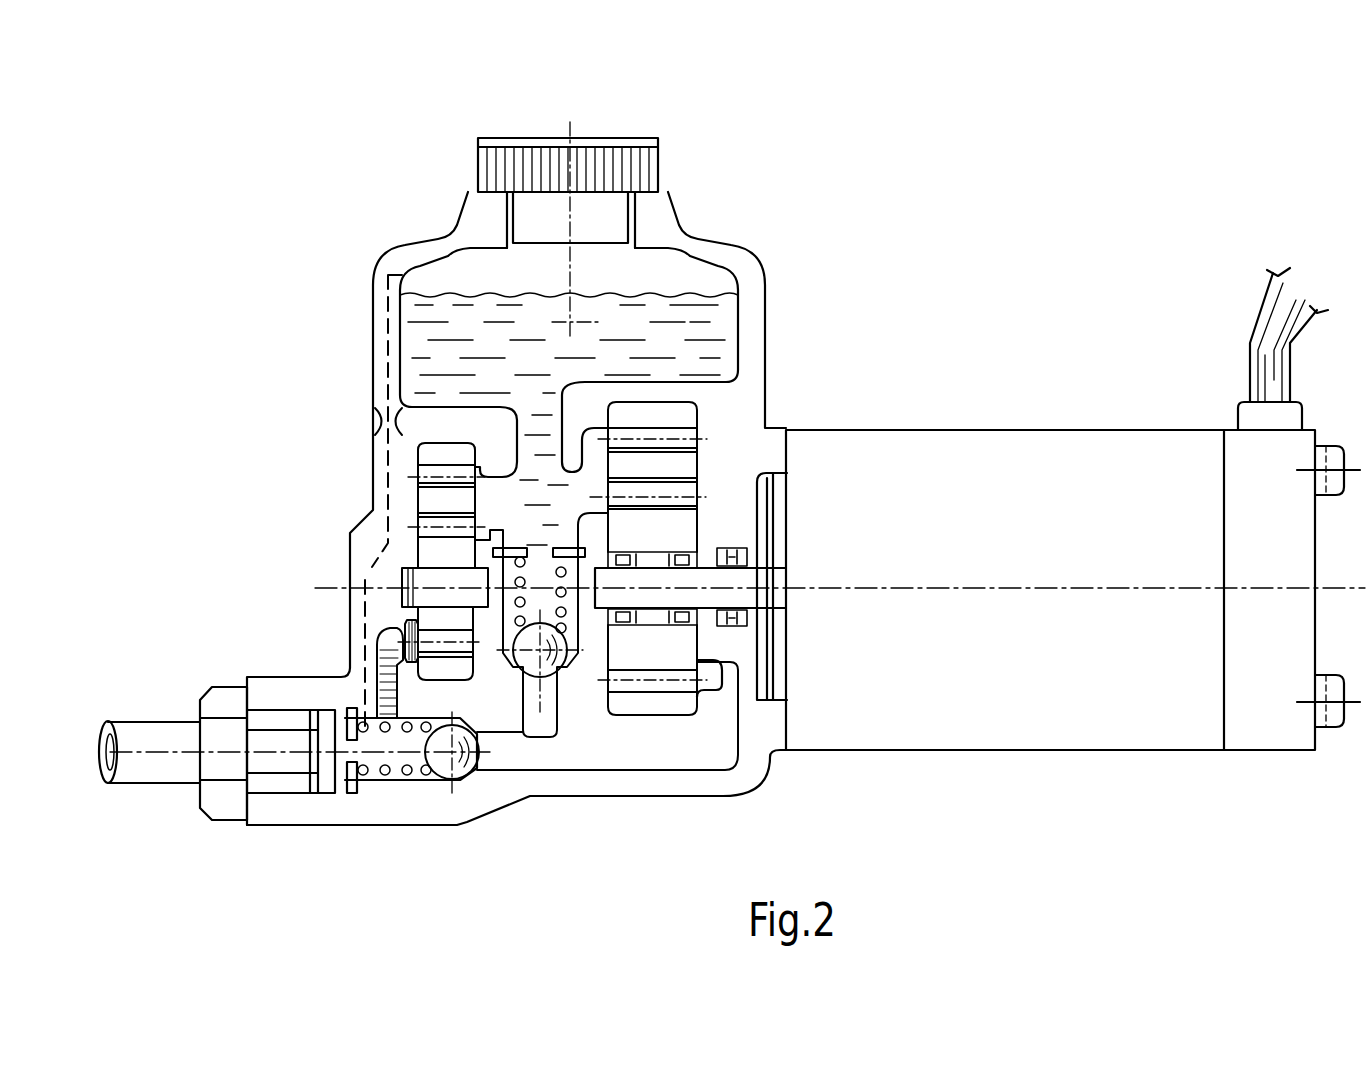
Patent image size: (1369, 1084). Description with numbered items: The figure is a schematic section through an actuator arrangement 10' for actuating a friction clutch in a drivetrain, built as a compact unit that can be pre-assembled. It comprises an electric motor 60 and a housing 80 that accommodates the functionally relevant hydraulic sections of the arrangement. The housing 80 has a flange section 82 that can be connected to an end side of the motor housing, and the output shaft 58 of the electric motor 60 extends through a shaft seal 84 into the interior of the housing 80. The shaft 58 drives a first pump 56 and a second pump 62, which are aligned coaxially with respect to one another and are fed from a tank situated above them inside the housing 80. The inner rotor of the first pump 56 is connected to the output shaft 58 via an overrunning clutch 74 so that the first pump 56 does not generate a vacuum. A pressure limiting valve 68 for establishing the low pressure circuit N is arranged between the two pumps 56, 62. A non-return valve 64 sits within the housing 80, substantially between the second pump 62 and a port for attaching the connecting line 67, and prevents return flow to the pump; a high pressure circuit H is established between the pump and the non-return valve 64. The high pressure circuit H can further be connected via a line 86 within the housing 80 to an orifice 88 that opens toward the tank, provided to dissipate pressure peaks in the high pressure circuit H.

The actuator arrangement 10' is at (1245, 112).
The housing 80 is at (745, 270).
The line 86 is at (380, 345).
The orifice 88 is at (383, 423).
The second pump 62 is at (435, 527).
The first pump 56 is at (667, 532).
The flange section 82 is at (741, 436).
The electric motor 60 is at (1026, 477).
The connecting line 67 is at (160, 743).
The high pressure circuit H is at (377, 775).
The non-return valve 64 is at (440, 773).
The pressure limiting valve 68 is at (527, 663).
The low pressure circuit N is at (590, 757).
The overrunning clutch 74 is at (650, 613).
The output shaft 58 is at (705, 600).
The shaft seal 84 is at (718, 602).